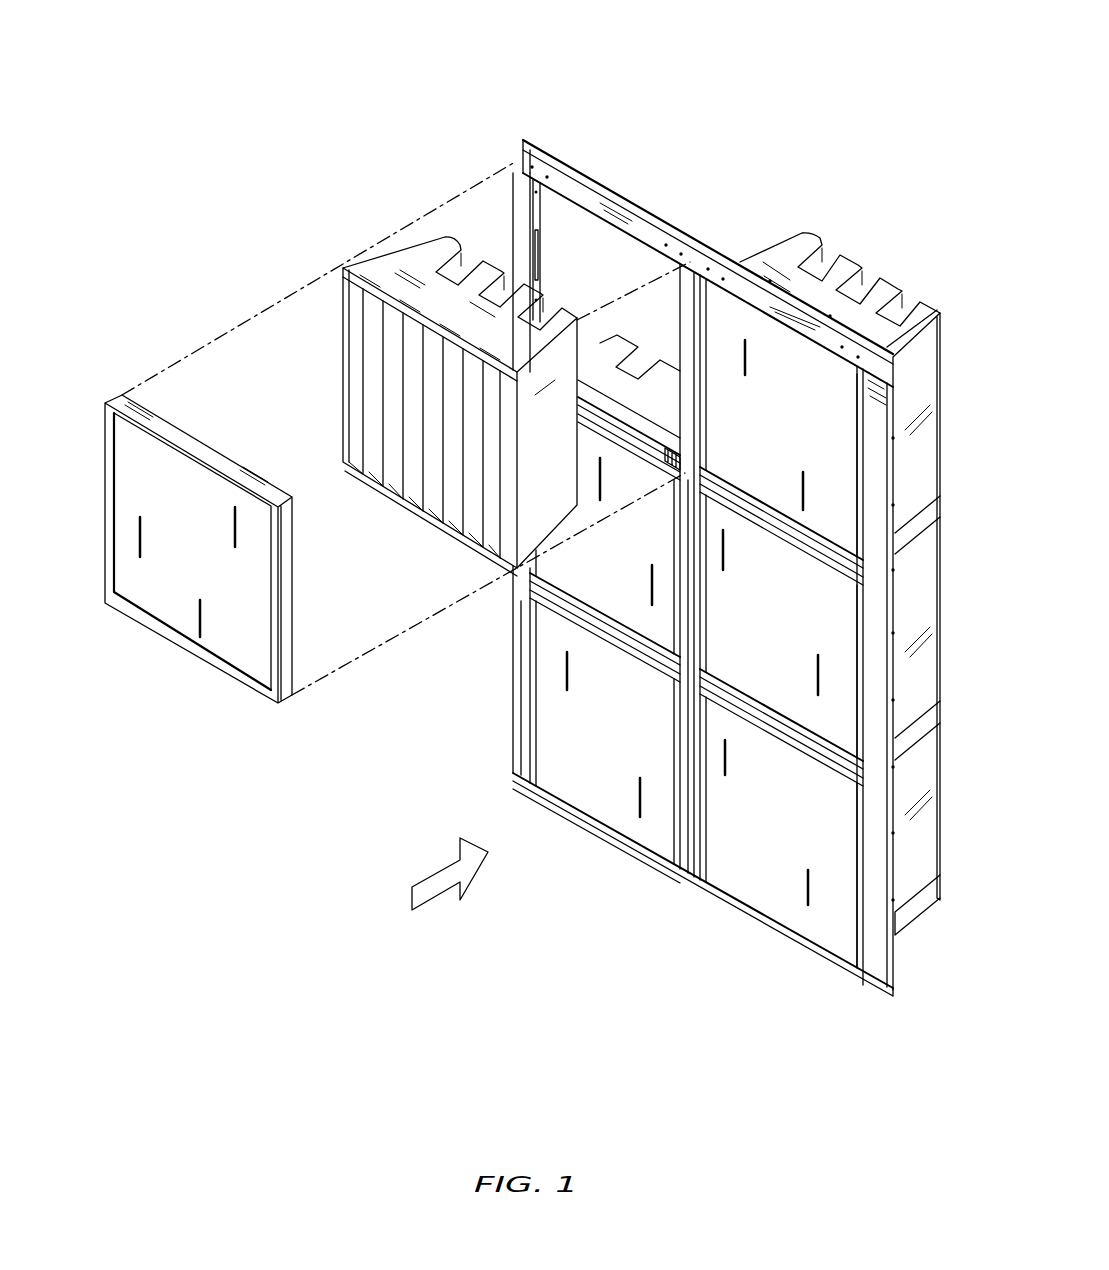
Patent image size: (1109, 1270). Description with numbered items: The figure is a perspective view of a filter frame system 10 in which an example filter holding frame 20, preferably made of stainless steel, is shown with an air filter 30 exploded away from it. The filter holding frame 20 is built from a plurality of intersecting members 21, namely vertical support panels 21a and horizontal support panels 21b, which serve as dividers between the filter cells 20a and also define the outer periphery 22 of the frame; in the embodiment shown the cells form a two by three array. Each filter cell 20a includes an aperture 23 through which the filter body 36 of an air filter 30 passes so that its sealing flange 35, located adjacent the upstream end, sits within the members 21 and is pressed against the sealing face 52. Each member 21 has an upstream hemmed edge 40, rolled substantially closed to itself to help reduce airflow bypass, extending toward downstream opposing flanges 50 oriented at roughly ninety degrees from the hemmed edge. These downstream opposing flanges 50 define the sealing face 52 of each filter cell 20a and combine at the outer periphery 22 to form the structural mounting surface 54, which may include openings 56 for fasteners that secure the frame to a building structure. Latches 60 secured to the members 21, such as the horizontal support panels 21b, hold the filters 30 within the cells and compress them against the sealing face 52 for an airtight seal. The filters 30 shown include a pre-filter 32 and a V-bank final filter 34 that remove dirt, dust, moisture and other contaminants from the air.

The filter frame system 10 is at (300, 133).
The filter holding frame 20 is at (506, 108).
The filter cells 20a is at (660, 272).
The intersecting members 21 is at (636, 176).
The vertical support panels 21a is at (520, 197).
The horizontal support panels 21b is at (735, 258).
The outer periphery 22 is at (844, 992).
The aperture 23 is at (600, 238).
The air filter 30 is at (616, 812).
The pre-filter 32 is at (98, 383).
The final filter 34 is at (314, 264).
The sealing flange 35 is at (352, 262).
The filter body 36 is at (408, 263).
The upstream hemmed edge 40 is at (638, 236).
The downstream opposing flanges 50 is at (541, 207).
The sealing face 52 is at (541, 275).
The mounting surface 54 is at (882, 348).
The openings 56 is at (897, 892).
The latches 60 is at (679, 462).